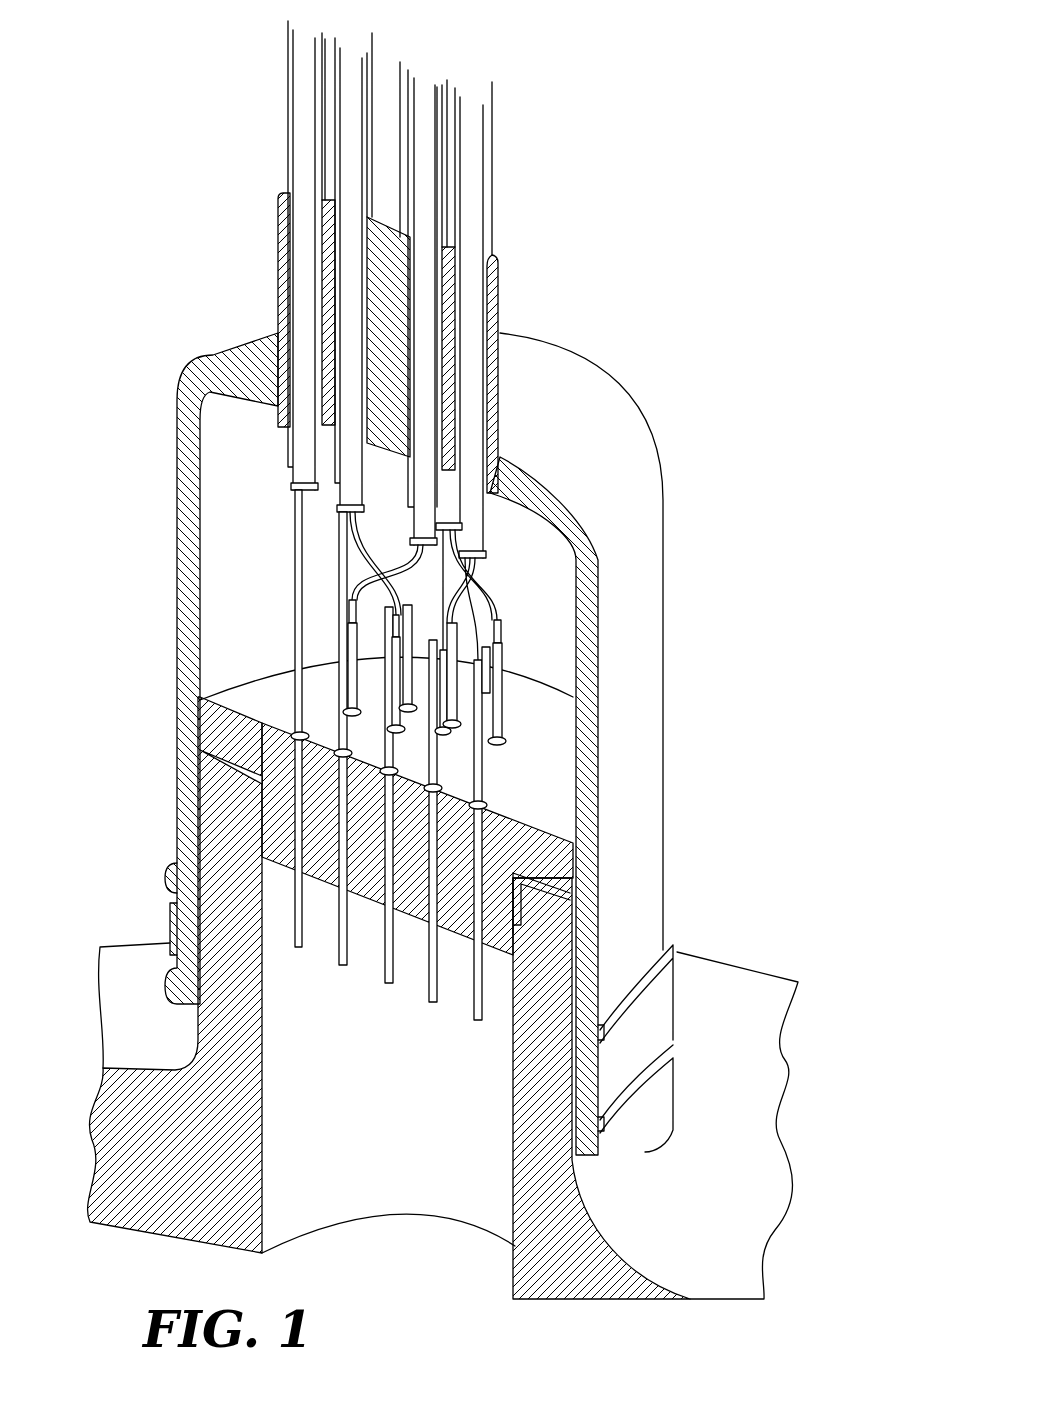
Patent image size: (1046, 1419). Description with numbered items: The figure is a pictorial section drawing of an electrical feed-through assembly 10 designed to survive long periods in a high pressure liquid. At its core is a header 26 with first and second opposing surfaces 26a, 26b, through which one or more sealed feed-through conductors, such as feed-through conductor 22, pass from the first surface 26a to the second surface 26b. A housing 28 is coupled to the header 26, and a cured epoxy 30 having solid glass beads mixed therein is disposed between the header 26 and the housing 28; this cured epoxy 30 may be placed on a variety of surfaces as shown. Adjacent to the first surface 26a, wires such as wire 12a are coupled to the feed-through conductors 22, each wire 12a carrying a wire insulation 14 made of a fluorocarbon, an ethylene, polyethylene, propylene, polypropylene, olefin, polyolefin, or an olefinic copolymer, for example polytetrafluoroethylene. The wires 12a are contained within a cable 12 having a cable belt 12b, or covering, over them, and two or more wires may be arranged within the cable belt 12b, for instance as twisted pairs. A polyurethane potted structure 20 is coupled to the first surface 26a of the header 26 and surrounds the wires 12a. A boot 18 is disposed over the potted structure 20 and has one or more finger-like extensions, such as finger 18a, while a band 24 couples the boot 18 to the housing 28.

The electrical feed-through assembly 10 is at (704, 177).
The cable 12 is at (493, 140).
The wire 12a is at (503, 599).
The cable belt 12b is at (493, 185).
The wire insulation 14 is at (505, 622).
The boot 18 is at (567, 358).
The finger 18a is at (500, 280).
The potted structure 20 is at (530, 543).
The feed-through conductor 22 is at (507, 747).
The band 24 is at (645, 1065).
The header 26 is at (200, 712).
The first surface 26a is at (265, 693).
The second surface 26b is at (203, 917).
The housing 28 is at (392, 1141).
The cured epoxy 30 is at (262, 813).